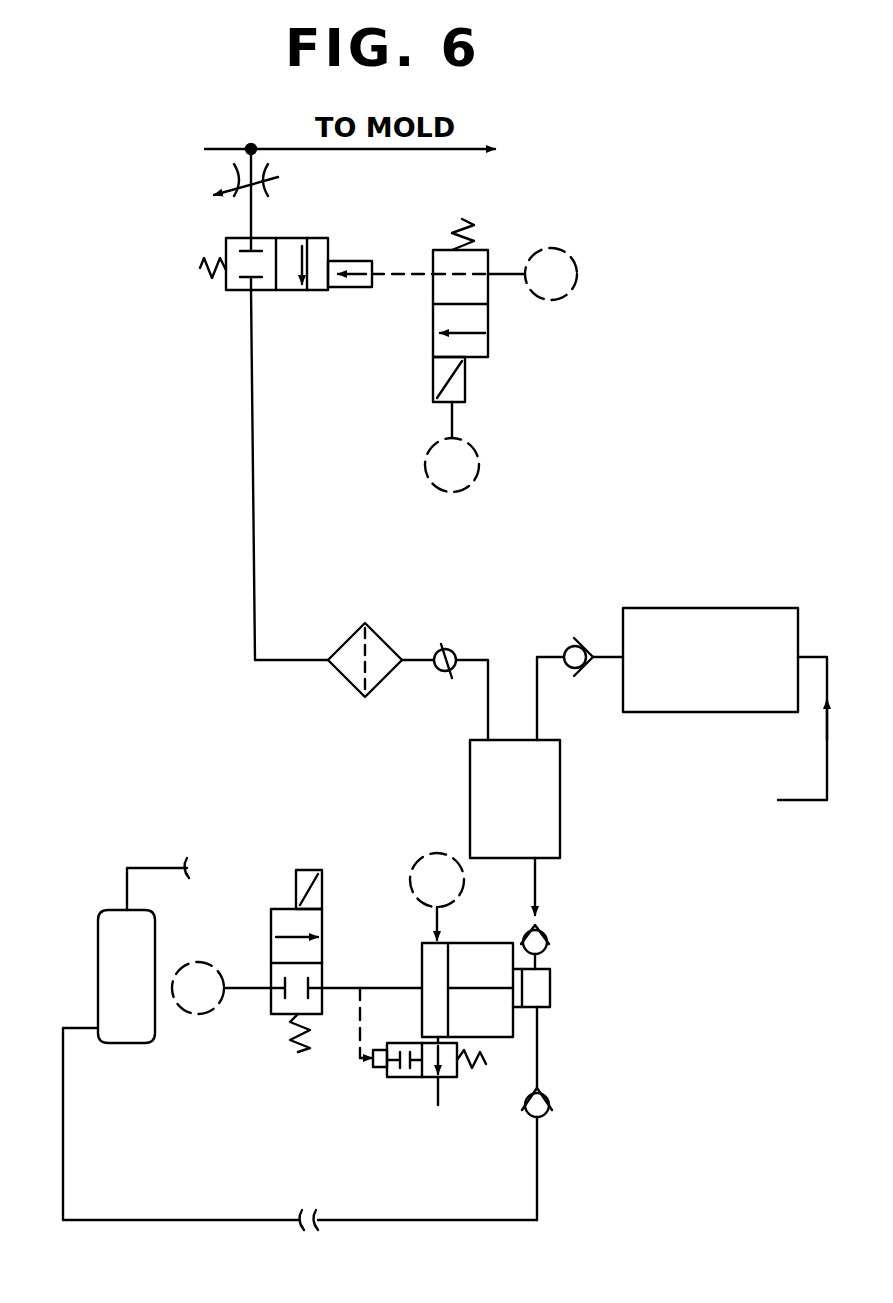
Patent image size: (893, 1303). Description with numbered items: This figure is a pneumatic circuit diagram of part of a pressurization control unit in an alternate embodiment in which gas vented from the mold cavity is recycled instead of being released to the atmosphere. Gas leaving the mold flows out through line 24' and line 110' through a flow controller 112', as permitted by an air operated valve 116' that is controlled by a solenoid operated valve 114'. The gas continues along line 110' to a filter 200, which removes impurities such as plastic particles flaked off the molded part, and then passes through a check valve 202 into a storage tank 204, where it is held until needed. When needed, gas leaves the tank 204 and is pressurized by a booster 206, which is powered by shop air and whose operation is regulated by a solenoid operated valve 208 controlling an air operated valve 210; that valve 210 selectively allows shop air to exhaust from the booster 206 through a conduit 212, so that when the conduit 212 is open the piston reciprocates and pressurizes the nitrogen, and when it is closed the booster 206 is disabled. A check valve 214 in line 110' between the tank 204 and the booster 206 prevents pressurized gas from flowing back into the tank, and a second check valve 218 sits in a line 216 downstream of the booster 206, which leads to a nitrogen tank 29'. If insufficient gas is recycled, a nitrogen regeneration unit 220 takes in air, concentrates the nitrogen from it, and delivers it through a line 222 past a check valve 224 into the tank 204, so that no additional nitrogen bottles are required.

The line 24' is at (398, 166).
The line 110' is at (219, 404).
The flow controller 112' is at (194, 177).
The air operated valve 116' is at (271, 288).
The solenoid operated valve 114' is at (522, 355).
The filter 200 is at (345, 641).
The check valve 202 is at (440, 649).
The line 222 is at (610, 655).
The check valve 224 is at (580, 671).
The nitrogen regeneration unit 220 is at (695, 608).
The storage tank 204 is at (490, 780).
The check valve 214 is at (549, 935).
The booster 206 is at (550, 990).
The second check valve 218 is at (549, 1097).
The air operated valve 210 is at (404, 1080).
The conduit 212 is at (440, 1093).
The solenoid operated valve 208 is at (270, 911).
The nitrogen tank 29' is at (114, 974).
The line 216 is at (410, 1222).